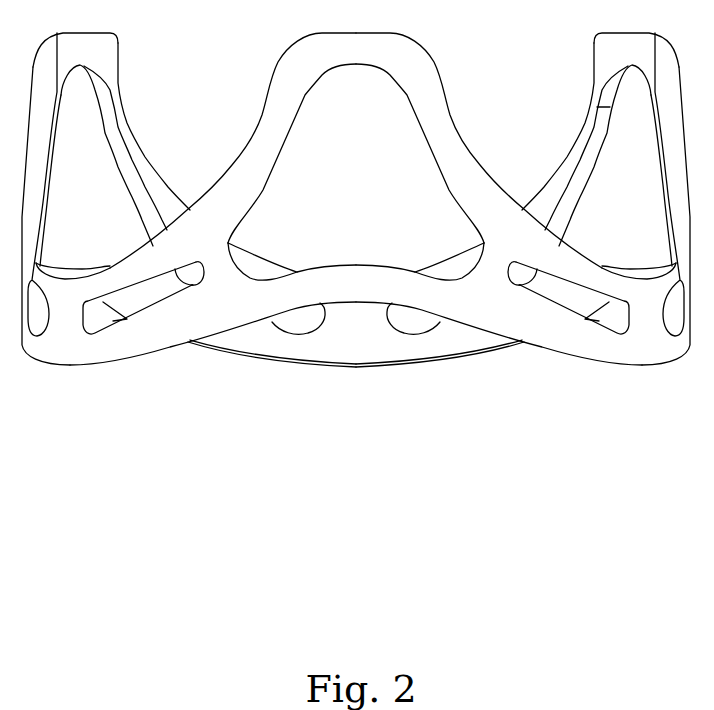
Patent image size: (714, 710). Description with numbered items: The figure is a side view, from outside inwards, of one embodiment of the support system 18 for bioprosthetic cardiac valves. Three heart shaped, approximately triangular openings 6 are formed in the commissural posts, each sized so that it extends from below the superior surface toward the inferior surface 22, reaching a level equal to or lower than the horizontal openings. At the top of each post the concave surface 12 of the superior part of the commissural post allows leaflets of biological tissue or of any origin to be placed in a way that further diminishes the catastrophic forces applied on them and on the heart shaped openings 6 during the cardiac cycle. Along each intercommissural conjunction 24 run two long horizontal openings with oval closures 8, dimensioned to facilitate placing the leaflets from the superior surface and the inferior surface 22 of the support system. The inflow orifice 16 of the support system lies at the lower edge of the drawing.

The heart shaped openings 6 is at (356, 172).
The long horizontal openings with oval closures 8 is at (356, 299).
The concave surface of the superior part of the commissural post 12 is at (356, 156).
The inflow orifice of the support system 16 is at (270, 322).
The support system for bioprosthetic cardiac valves 18 is at (252, 79).
The inferior surface of the support system 22 is at (73, 380).
The intercommissural conjunction 24 is at (373, 259).